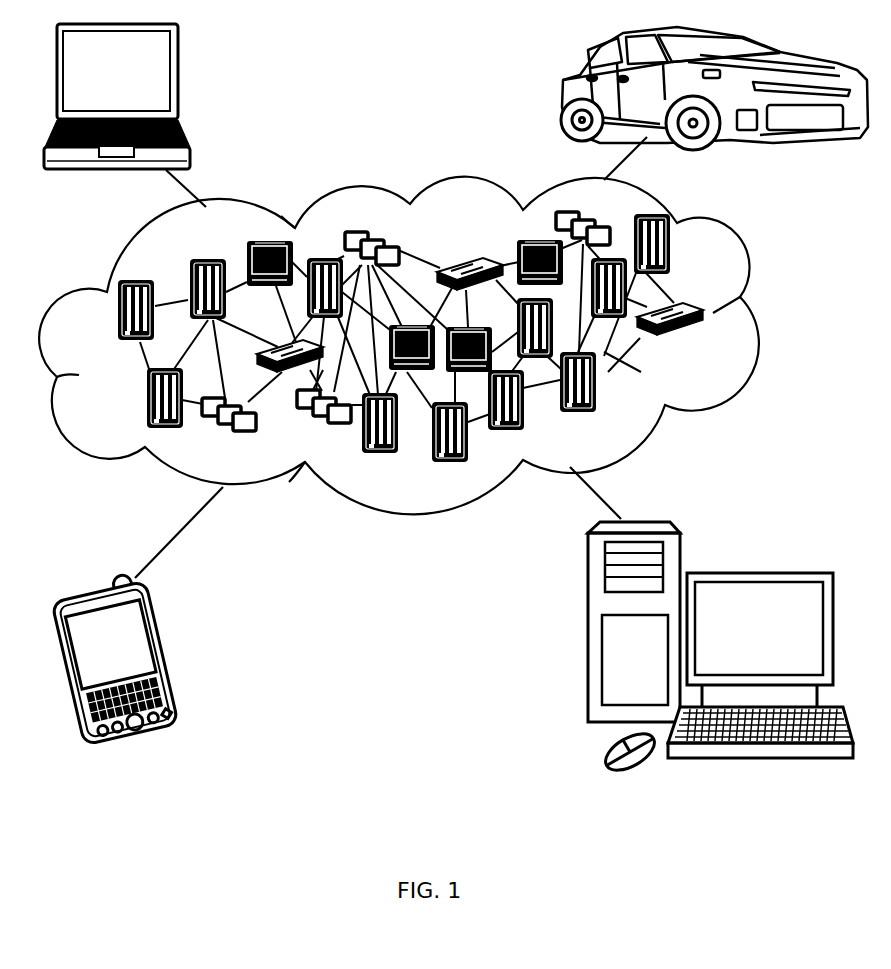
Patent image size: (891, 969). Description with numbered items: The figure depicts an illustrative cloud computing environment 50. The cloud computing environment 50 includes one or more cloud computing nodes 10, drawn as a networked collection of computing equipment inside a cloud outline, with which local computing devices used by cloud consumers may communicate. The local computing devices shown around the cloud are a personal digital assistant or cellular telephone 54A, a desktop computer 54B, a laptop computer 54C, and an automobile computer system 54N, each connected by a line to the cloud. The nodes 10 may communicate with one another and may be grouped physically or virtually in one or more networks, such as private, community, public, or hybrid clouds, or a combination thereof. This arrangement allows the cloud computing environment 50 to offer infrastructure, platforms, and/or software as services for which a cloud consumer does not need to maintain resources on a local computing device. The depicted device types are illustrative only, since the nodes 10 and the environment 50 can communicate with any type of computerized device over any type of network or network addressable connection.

The cloud computing node 10 is at (710, 345).
The cloud computing environment 50 is at (753, 320).
The personal digital assistant or cellular telephone 54A is at (168, 658).
The desktop computer 54B is at (758, 573).
The laptop computer 54C is at (178, 81).
The automobile computer system 54N is at (566, 100).